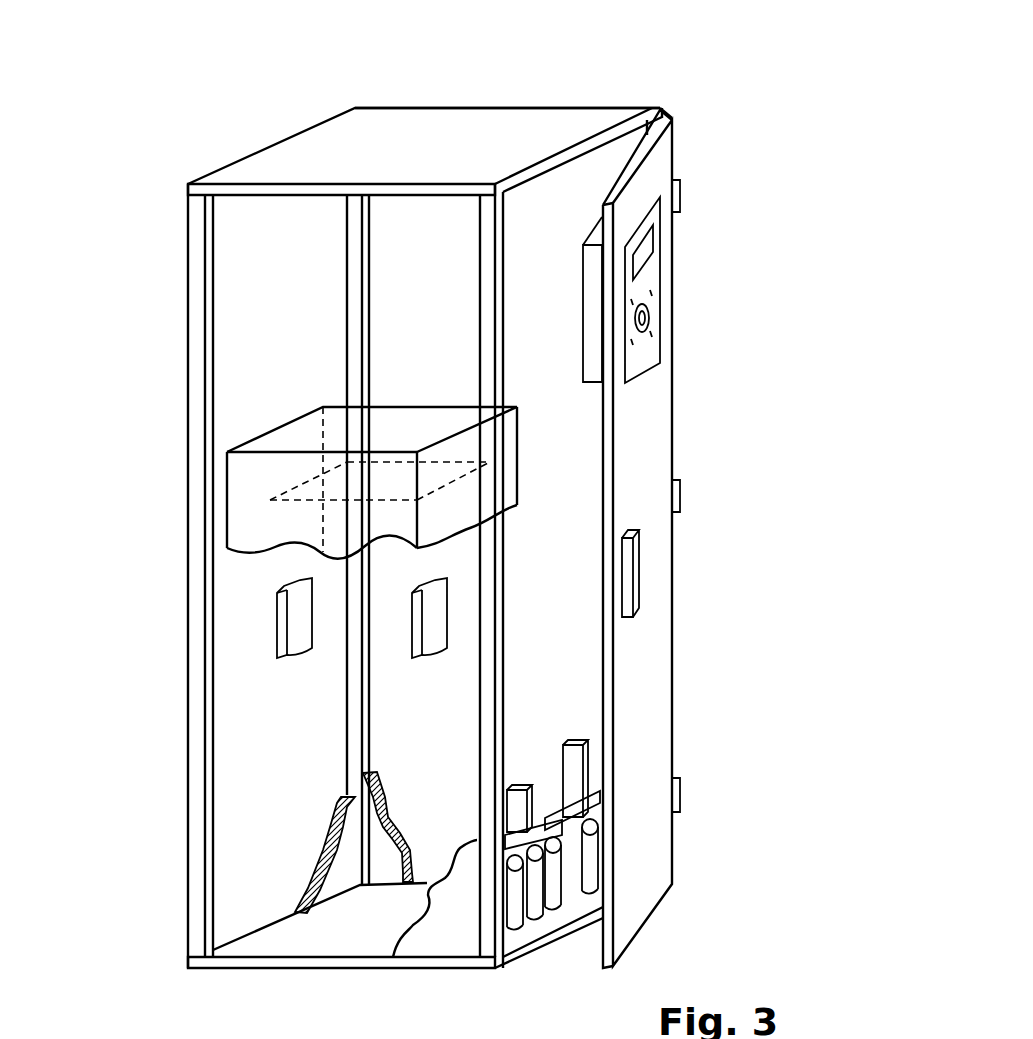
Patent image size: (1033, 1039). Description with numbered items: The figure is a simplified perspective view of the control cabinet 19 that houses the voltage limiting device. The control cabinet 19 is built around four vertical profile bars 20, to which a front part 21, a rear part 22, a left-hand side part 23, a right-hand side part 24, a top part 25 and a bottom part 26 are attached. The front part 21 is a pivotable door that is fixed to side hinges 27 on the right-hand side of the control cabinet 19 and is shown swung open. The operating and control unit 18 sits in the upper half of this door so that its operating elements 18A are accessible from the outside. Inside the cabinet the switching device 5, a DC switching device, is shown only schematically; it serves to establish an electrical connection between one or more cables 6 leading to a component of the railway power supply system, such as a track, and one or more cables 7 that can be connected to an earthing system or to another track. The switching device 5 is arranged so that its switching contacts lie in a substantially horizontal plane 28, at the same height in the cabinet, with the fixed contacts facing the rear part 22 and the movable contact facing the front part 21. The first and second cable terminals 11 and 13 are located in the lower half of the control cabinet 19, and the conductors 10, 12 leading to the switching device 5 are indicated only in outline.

The control cabinet 19 is at (415, 100).
The top part 25 is at (487, 120).
The vertical profile bars 20 is at (648, 107).
The switching device 5 is at (266, 421).
The horizontal plane 28 is at (305, 490).
The conductor 12 is at (297, 621).
The conductor 10 is at (433, 640).
The front part 21 is at (657, 687).
The side hinges 27 is at (680, 197).
The operating and control unit 18 is at (668, 272).
The operating elements 18A is at (648, 243).
The first cable terminal 11 is at (597, 815).
The second cable terminal 13 is at (597, 830).
The cables 6 is at (590, 865).
The cables 7 is at (553, 903).
The bottom part 26 is at (258, 942).
The rear part 22 is at (343, 880).
The right-hand side part 24 is at (382, 863).
The left-hand side part 23 is at (445, 930).